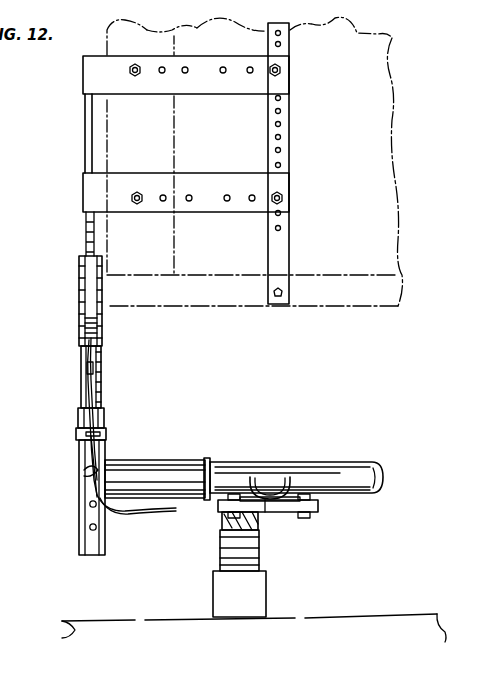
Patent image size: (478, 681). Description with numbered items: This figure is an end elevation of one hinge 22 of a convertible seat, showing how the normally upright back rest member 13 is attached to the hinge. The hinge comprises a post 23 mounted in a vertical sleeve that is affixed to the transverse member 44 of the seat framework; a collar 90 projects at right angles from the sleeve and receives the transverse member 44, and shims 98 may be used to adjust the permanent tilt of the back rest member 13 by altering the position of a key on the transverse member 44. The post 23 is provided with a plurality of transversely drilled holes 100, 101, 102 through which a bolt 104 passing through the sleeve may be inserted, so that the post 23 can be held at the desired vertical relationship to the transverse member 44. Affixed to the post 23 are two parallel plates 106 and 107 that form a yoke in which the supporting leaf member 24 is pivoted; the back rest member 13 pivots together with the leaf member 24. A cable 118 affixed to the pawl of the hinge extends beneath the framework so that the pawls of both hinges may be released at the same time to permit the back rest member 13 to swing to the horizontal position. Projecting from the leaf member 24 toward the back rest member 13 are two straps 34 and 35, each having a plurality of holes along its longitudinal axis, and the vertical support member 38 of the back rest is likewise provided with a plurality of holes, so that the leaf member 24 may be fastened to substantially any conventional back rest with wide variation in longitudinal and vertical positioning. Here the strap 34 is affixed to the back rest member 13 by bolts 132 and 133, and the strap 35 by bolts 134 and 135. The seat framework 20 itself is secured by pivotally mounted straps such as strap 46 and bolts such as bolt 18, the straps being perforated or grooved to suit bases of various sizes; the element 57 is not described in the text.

The back rest member 13 is at (395, 40).
The bolt 18 is at (220, 512).
The framework 20 is at (230, 557).
The hinge 22 is at (82, 402).
The post 23 is at (90, 545).
The leaf member 24 is at (83, 141).
The strap 34 is at (88, 85).
The strap 35 is at (108, 198).
The vertical support member 38 is at (289, 258).
The transverse member 44 is at (267, 436).
The strap 46 is at (282, 512).
The bracket plate 57 is at (317, 507).
The collar 90 is at (160, 460).
The shims 98 is at (212, 460).
The hole 100 is at (89, 527).
The hole 101 is at (89, 504).
The hole 102 is at (93, 482).
The bolt 104 is at (85, 440).
The plate 106 is at (86, 373).
The plate 107 is at (103, 384).
The cable 118 is at (176, 510).
The bolt 132 is at (140, 27).
The bolt 133 is at (137, 192).
The bolt 134 is at (290, 25).
The bolt 135 is at (282, 198).